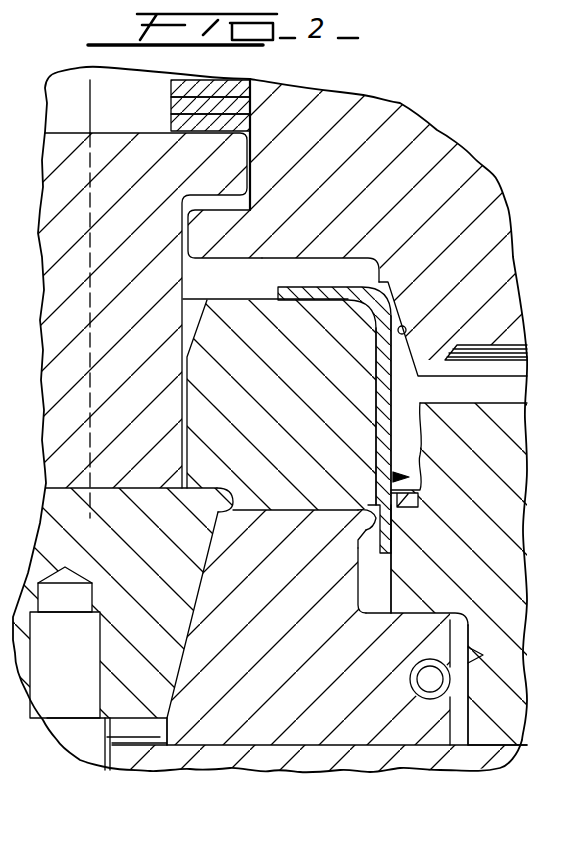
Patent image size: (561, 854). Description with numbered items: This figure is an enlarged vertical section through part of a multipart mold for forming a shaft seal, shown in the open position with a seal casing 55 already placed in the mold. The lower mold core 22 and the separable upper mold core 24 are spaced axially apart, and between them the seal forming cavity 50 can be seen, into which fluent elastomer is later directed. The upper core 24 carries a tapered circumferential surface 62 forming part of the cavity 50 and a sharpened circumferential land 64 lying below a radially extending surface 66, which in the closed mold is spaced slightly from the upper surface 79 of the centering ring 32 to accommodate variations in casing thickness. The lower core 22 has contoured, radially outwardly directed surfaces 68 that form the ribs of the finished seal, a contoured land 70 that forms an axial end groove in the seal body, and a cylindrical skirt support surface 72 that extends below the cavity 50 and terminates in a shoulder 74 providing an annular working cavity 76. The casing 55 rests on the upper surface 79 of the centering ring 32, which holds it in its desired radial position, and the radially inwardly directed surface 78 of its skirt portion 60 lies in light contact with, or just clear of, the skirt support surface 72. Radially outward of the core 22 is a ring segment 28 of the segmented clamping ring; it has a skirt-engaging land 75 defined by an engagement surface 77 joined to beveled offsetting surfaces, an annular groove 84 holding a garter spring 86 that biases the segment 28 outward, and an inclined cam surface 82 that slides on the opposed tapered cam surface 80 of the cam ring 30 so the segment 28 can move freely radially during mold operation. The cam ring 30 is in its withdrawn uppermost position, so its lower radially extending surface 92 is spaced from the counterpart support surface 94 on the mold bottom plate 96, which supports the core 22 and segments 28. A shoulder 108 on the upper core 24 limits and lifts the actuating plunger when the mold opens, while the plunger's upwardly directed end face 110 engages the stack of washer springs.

The lower mold core 22 is at (498, 580).
The upper mold core 24 is at (487, 270).
The ring segment 28 is at (262, 670).
The cam ring 30 is at (157, 536).
The centering ring 32 is at (307, 380).
The seal forming cavity 50 is at (377, 484).
The casing 55 is at (344, 275).
The skirt portion 60 is at (391, 548).
The tapered circumferential surface 62 is at (406, 329).
The sharpened circumferential land 64 is at (384, 278).
The radially extending surface 66 is at (292, 258).
The radially outwardly directed surfaces 68 is at (420, 480).
The contoured land 70 is at (420, 494).
The skirt support surface 72 is at (358, 572).
The shoulder 74 is at (402, 620).
The skirt-engaging land 75 is at (357, 538).
The annular working cavity 76 is at (457, 686).
The engagement surface 77 is at (367, 512).
The radially inwardly directed surface 78 is at (398, 529).
The upper surface 79 is at (238, 298).
The tapered cam surface 80 is at (194, 613).
The inclined cam surface 82 is at (215, 575).
The annular groove 84 is at (443, 710).
The garter spring 86 is at (482, 682).
The lower radially extending surface 92 is at (110, 747).
The support surface 94 is at (142, 737).
The mold bottom plate 96 is at (323, 757).
The shoulder 108 is at (222, 197).
The end face 110 is at (122, 135).